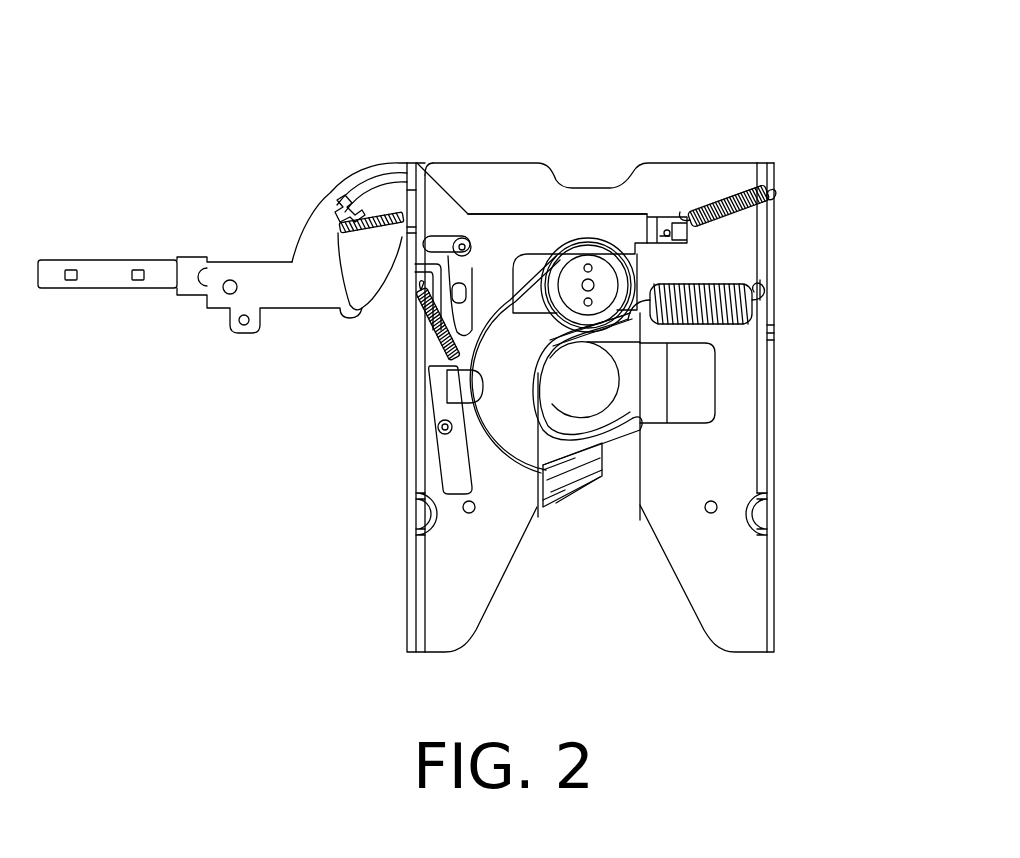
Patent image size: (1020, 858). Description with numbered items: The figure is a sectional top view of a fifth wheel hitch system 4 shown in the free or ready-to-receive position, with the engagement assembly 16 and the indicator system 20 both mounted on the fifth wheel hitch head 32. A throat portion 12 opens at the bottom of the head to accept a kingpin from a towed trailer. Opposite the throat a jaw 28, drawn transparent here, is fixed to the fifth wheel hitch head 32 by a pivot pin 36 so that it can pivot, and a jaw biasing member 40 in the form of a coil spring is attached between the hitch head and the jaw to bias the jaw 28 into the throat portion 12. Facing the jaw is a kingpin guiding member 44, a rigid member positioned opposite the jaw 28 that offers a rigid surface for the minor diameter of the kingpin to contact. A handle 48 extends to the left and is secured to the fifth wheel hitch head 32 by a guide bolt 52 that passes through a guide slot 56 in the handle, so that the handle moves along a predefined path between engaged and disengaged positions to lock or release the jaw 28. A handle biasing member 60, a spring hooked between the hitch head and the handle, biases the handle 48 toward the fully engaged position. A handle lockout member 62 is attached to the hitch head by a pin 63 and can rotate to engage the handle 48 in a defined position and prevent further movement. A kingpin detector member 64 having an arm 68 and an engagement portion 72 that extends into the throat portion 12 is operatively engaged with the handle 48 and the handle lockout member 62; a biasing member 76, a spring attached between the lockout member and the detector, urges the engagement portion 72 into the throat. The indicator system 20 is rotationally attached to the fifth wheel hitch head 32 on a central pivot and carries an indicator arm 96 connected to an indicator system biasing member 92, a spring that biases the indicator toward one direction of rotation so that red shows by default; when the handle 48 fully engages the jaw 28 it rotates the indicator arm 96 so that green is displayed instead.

The fifth wheel hitch system 4 is at (845, 524).
The throat portion 12 is at (524, 601).
The engagement assembly 16 is at (640, 601).
The indicator system 20 is at (348, 150).
The jaw 28 is at (585, 487).
The fifth wheel hitch head 32 is at (735, 477).
The pivot pin 36 is at (590, 280).
The jaw biasing member 40 is at (762, 292).
The kingpin guiding member 44 is at (708, 390).
The handle 48 is at (518, 222).
The guide bolt 52 is at (464, 240).
The guide slot 56 is at (460, 218).
The handle biasing member 60 is at (772, 186).
The handle lockout member 62 is at (437, 380).
The pin 63 is at (440, 427).
The kingpin detector member 64 is at (440, 355).
The arm 68 is at (500, 420).
The engagement portion 72 is at (440, 386).
The biasing member 76 is at (437, 303).
The indicator system biasing member 92 is at (318, 222).
The indicator arm 96 is at (385, 200).